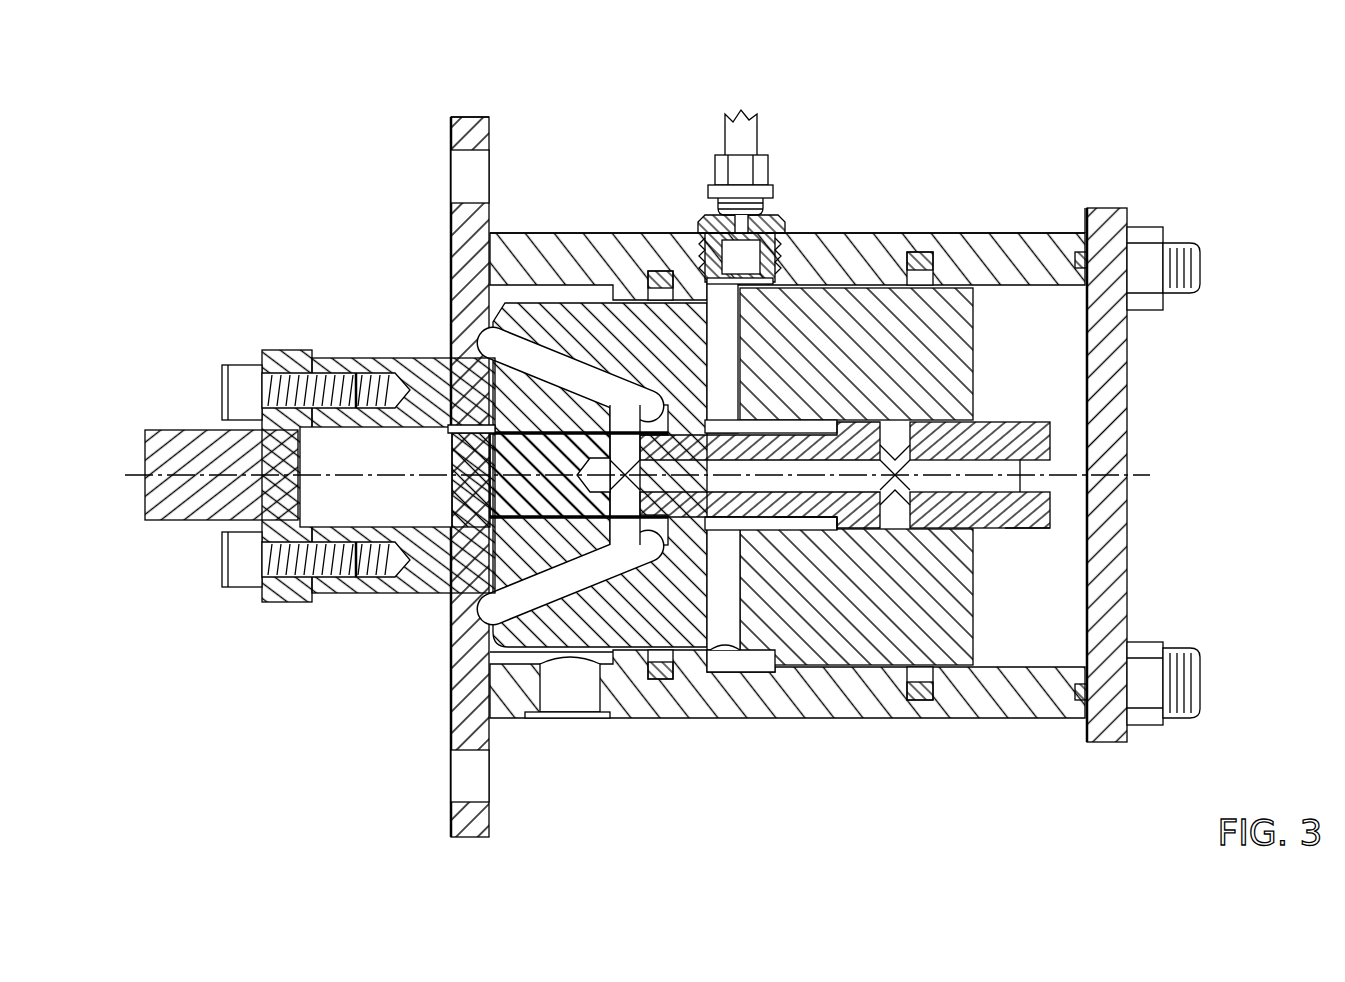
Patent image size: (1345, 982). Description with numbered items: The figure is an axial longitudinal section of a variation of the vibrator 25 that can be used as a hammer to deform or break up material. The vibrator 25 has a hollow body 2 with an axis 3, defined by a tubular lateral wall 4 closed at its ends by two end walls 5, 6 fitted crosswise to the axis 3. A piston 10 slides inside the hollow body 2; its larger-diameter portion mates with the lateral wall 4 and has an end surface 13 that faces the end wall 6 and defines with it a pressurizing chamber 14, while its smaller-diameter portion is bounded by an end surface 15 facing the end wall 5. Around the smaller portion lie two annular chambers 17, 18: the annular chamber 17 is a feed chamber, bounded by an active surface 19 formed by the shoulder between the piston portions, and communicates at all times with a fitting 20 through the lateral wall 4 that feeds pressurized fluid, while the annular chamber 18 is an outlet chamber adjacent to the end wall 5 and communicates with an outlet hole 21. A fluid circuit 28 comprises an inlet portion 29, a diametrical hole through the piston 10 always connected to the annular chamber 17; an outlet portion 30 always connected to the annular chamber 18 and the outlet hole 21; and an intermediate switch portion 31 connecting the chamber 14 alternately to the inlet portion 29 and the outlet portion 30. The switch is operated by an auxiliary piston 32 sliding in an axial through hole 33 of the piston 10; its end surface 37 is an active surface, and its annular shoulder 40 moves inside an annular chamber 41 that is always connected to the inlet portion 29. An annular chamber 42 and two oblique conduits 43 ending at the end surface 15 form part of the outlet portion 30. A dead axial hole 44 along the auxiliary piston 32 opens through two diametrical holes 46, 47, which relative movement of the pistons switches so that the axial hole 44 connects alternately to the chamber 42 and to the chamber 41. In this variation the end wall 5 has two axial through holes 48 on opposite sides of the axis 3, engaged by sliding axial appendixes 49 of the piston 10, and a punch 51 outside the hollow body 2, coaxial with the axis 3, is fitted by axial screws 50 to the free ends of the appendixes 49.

The hollow body 2 is at (1035, 227).
The axis 3 is at (1062, 478).
The tubular lateral wall 4 is at (787, 453).
The end wall 5 is at (465, 277).
The end wall 6 is at (1107, 333).
The piston 10 is at (843, 275).
The end surface 13 is at (980, 403).
The pressurizing chamber 14 is at (1060, 558).
The end surface 15 is at (485, 313).
The annular chamber 17 is at (728, 665).
The annular chamber 18 is at (520, 660).
The active surface 19 is at (730, 290).
The fitting 20 is at (778, 200).
The outlet hole 21 is at (565, 695).
The vibrator 25 is at (968, 168).
The fluid circuit 28 is at (778, 543).
The inlet portion 29 is at (727, 372).
The outlet portion 30 is at (573, 350).
The intermediate switch portion 31 is at (818, 445).
The auxiliary piston 32 is at (1004, 536).
The axial through hole 33 is at (1045, 484).
The end surface 37 is at (1058, 512).
The annular shoulder 40 is at (836, 525).
The annular chamber 41 is at (757, 530).
The annular chamber 42 is at (650, 525).
The oblique conduits 43 is at (520, 348).
The dead axial hole 44 is at (693, 466).
The diametrical hole 46 is at (622, 500).
The diametrical hole 47 is at (893, 437).
The axial through holes 48 is at (378, 480).
The axial appendixes 49 is at (422, 367).
The axial screws 50 is at (296, 385).
The punch 51 is at (188, 447).